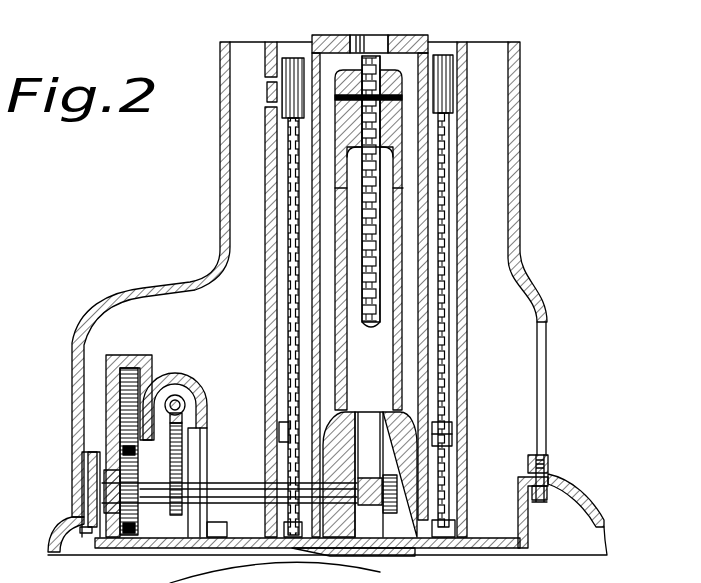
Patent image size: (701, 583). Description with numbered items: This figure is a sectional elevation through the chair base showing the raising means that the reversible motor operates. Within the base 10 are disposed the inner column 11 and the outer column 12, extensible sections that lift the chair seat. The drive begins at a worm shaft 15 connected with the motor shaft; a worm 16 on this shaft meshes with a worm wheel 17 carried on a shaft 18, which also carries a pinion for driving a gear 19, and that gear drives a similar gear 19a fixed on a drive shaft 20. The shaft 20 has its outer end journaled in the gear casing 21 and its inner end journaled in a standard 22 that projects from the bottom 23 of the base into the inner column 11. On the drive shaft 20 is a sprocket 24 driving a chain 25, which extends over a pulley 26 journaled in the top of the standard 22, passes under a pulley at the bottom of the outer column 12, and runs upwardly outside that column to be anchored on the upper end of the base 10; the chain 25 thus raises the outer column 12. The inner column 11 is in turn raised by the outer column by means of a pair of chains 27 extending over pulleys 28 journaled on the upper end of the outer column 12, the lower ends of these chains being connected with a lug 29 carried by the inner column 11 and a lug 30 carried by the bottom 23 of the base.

The base 10 is at (200, 233).
The inner column 11 is at (422, 408).
The outer column 12 is at (468, 352).
The worm shaft 15 is at (186, 404).
The worm 16 is at (188, 385).
The worm wheel 17 is at (183, 418).
The shaft 18 is at (158, 468).
The gear 19 is at (132, 374).
The gear 19a is at (130, 533).
The shaft 20 is at (238, 490).
The gear casing 21 is at (106, 430).
The standard 22 is at (398, 396).
The bottom 23 is at (513, 543).
The sprocket 24 is at (370, 508).
The chain 25 is at (370, 324).
The pulley 26 is at (382, 78).
The chains 27 is at (292, 265).
The pulleys 28 is at (283, 100).
The lug 29 is at (280, 433).
The lug 30 is at (290, 520).